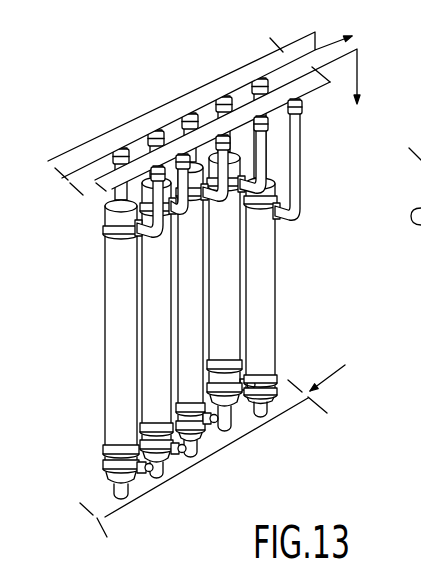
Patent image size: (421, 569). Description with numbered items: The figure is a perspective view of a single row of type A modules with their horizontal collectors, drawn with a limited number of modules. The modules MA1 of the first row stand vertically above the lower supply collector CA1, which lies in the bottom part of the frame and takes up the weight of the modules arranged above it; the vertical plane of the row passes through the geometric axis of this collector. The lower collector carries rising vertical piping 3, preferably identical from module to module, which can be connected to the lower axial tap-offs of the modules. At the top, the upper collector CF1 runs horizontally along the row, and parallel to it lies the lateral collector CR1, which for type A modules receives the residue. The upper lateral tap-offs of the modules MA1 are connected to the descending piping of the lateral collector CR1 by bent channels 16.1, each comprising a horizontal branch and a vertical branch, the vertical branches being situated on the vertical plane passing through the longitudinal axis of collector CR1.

The upper collector CF1 is at (165, 122).
The lateral collector CR1 is at (116, 200).
The bent channel 16.1 is at (141, 260).
The module MA1 is at (270, 298).
The supply collector CA1 is at (246, 430).
The rising vertical piping 3 is at (190, 448).